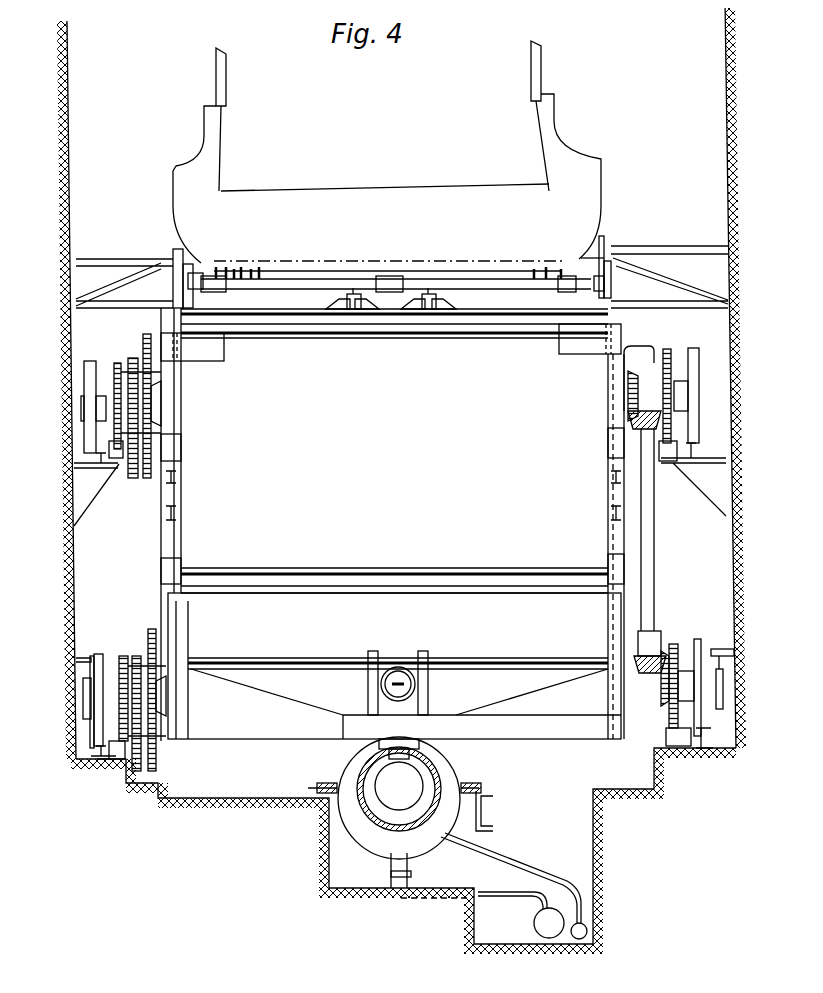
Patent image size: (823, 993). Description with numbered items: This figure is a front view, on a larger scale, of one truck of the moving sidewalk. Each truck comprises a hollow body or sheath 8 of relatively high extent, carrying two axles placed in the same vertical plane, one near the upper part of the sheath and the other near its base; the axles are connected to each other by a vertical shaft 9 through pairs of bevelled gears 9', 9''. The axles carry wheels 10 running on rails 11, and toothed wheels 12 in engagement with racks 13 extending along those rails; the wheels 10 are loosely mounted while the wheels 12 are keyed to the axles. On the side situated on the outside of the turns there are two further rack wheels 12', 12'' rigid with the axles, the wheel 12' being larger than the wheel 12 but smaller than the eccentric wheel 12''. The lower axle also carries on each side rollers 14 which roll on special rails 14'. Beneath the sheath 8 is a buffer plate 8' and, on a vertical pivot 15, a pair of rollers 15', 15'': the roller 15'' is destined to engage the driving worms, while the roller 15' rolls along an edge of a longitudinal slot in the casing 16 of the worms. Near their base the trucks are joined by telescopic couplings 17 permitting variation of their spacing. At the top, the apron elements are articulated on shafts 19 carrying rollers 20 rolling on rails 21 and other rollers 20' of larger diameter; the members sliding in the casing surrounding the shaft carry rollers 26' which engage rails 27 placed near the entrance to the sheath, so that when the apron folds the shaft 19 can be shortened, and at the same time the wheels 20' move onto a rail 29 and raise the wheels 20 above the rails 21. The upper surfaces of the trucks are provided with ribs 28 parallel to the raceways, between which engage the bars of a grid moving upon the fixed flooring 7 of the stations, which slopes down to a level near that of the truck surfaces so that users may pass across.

The fixed flooring 7 is at (346, 190).
The hollow body or sheath 8 is at (392, 524).
The buffer plate 8' is at (461, 727).
The vertical shaft 9 is at (658, 530).
The bevelled gear 9' is at (673, 387).
The bevelled gear 9'' is at (614, 676).
The wheel 10 is at (90, 391).
The rail 11 is at (100, 466).
The toothed wheel 12 is at (393, 533).
The rack wheel 12' is at (187, 549).
The rack wheel 12'' is at (193, 552).
The rack 13 is at (120, 460).
The roller 14 is at (403, 711).
The special rail 14' is at (405, 678).
The vertical pivot 15 is at (400, 787).
The roller 15' is at (359, 750).
The roller 15'' is at (350, 764).
The casing 16 is at (440, 828).
The telescopic coupling 17 is at (396, 662).
The shaft 19 is at (476, 280).
The roller 20 is at (408, 265).
The roller 20' is at (398, 254).
The rail 21 is at (165, 288).
The roller 26' is at (391, 330).
The rail 27 is at (338, 306).
The rib 28 is at (243, 268).
The rail 29 is at (590, 316).